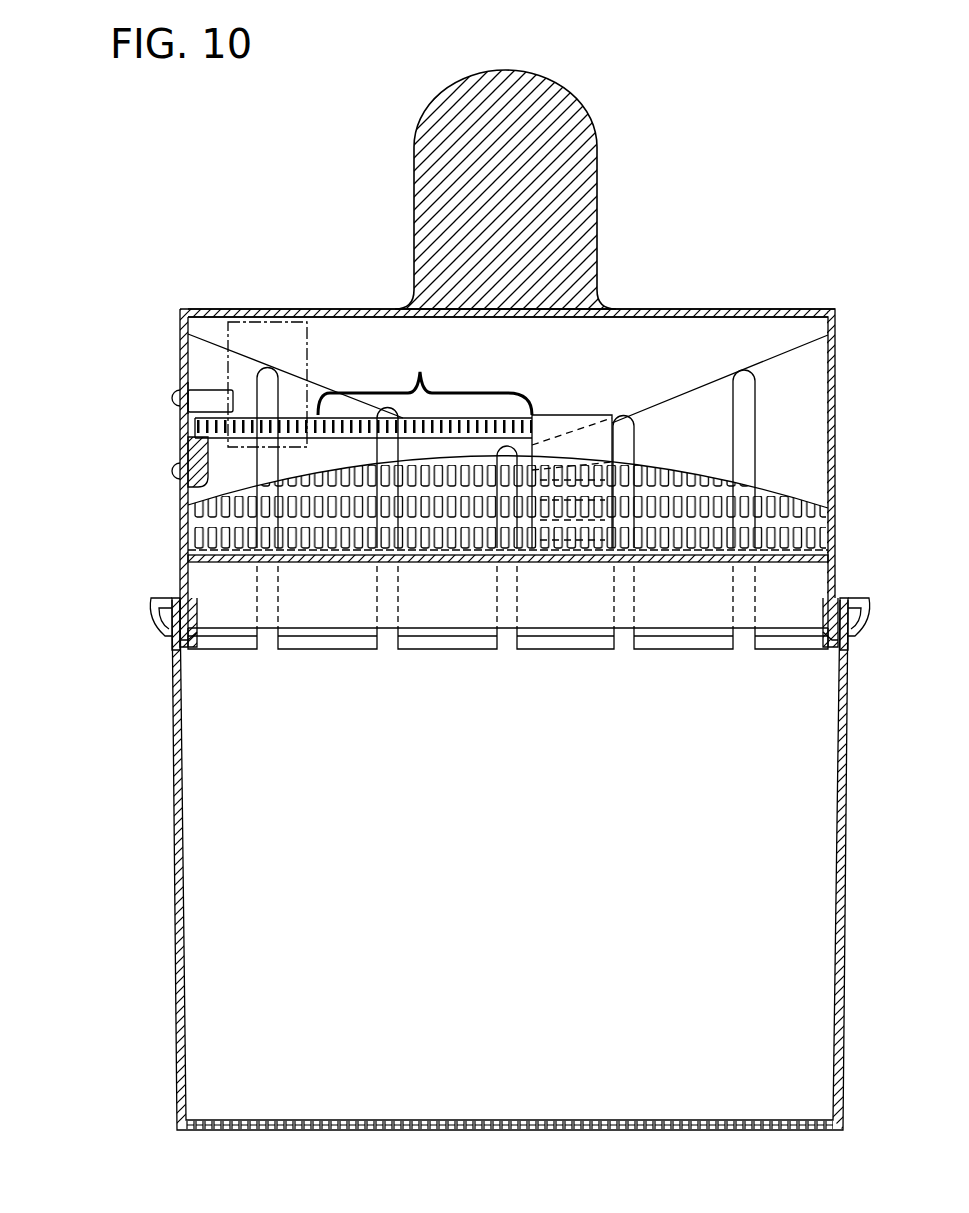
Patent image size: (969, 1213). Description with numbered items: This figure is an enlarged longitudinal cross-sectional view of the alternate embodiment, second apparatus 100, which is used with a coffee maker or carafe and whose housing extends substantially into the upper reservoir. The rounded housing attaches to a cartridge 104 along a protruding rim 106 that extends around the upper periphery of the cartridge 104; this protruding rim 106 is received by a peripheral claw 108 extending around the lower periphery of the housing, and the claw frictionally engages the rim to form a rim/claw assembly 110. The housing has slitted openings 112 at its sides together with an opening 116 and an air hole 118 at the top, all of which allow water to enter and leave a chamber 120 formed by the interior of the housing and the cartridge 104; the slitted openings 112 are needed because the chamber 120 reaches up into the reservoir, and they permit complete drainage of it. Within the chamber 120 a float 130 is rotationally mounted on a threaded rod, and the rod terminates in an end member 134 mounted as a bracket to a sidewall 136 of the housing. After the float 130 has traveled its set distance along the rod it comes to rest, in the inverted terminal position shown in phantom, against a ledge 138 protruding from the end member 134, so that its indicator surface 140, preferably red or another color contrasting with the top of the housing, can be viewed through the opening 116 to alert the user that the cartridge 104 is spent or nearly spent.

The second apparatus 100 is at (170, 302).
The cartridge 104 is at (534, 918).
The protruding rim 106 is at (173, 620).
The peripheral claw 108 is at (176, 598).
The rim/claw assembly 110 is at (154, 618).
The slitted openings 112 is at (745, 595).
The opening 116 is at (268, 311).
The air hole 118 is at (716, 312).
The chamber 120 is at (716, 445).
The float 130 is at (312, 352).
The end member 134 is at (181, 455).
The sidewall 136 is at (205, 355).
The ledge 138 is at (213, 393).
The indicator surface 140 is at (250, 320).